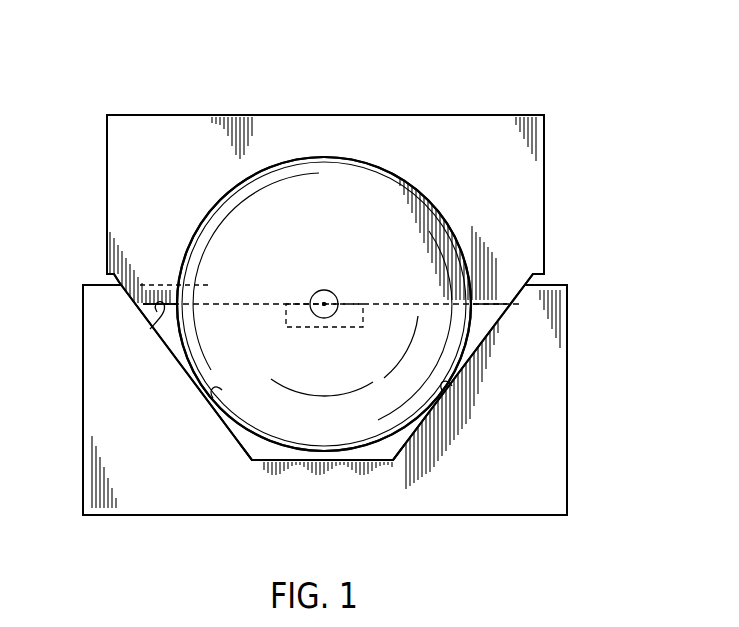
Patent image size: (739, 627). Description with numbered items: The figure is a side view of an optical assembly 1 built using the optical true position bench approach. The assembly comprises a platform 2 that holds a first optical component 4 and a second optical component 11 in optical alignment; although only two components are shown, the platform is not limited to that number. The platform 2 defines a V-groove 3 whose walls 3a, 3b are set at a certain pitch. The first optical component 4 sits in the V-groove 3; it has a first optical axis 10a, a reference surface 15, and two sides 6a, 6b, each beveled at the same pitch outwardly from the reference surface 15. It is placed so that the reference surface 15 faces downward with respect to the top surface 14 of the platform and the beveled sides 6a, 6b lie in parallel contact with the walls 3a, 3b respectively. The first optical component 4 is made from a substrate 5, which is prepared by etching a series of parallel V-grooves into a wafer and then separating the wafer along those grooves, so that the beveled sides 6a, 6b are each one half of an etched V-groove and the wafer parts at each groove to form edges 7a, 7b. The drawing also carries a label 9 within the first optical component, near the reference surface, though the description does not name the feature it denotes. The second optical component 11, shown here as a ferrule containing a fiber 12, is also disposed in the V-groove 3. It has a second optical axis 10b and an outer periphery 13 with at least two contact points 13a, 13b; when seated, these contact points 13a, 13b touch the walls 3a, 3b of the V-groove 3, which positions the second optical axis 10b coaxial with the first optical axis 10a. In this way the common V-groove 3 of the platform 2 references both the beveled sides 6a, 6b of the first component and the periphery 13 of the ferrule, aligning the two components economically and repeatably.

The optical assembly 1 is at (556, 50).
The platform 2 is at (520, 517).
The V-groove 3 is at (488, 313).
The wall 3a is at (253, 447).
The wall 3b is at (408, 448).
The first optical component 4 is at (96, 177).
The substrate 5 is at (142, 133).
The side 6a is at (118, 279).
The side 6b is at (540, 277).
The edge 7a is at (107, 205).
The edge 7b is at (544, 183).
The core region 9 is at (306, 328).
The first optical axis 10a is at (325, 302).
The second optical axis 10b is at (398, 252).
The second optical component 11 is at (293, 150).
The fiber 12 is at (316, 292).
The outer periphery 13 is at (212, 208).
The contact point 13a is at (214, 398).
The contact point 13b is at (442, 391).
The top surface 14 is at (556, 284).
The reference surface 15 is at (395, 306).